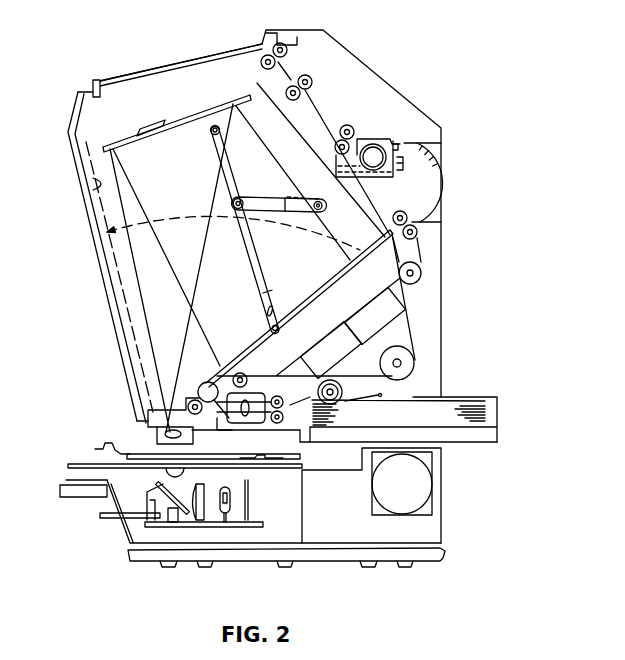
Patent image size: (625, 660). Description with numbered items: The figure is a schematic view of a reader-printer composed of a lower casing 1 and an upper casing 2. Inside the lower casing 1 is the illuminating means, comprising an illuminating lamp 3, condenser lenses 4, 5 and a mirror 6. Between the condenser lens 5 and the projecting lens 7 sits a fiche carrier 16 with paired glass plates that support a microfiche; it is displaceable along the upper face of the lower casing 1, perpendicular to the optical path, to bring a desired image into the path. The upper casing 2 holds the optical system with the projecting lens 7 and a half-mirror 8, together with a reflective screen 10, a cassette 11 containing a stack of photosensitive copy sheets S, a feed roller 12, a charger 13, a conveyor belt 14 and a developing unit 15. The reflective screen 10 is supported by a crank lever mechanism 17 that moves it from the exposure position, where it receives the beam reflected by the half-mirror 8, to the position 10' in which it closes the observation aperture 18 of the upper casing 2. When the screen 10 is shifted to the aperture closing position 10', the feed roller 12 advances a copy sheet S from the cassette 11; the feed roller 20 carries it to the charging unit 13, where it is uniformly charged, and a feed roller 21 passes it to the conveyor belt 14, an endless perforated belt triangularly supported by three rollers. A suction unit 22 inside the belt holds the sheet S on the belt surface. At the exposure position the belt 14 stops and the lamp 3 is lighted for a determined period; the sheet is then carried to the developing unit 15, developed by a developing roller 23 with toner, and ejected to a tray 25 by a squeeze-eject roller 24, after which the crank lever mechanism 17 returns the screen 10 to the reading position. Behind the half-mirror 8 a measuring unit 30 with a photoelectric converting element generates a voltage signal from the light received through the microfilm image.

The lower casing 1 is at (122, 534).
The upper casing 2 is at (381, 76).
The illuminating lamp 3 is at (232, 498).
The condenser lens 4 is at (206, 494).
The condenser lens 5 is at (165, 471).
The mirror 6 is at (167, 488).
The projecting lens 7 is at (154, 437).
The half-mirror 8 is at (108, 145).
The reflective screen 10 is at (316, 229).
The aperture closing position of the reflective screen 10' is at (71, 180).
The cassette 11 is at (499, 432).
The feed roller 12 is at (341, 386).
The charger 13 is at (258, 424).
The conveyor belt 14 is at (357, 260).
The developing unit 15 is at (376, 142).
The fiche carrier 16 is at (185, 448).
The crank lever mechanism 17 is at (233, 175).
The observation aperture 18 is at (100, 275).
The feed roller 20 is at (281, 422).
The feed roller 21 is at (201, 385).
The suction unit 22 is at (390, 312).
The developing roller 23 is at (377, 170).
The squeeze-eject roller 24 is at (288, 51).
The tray 25 is at (173, 64).
The measuring unit 30 is at (148, 117).
The copy sheet S is at (471, 402).